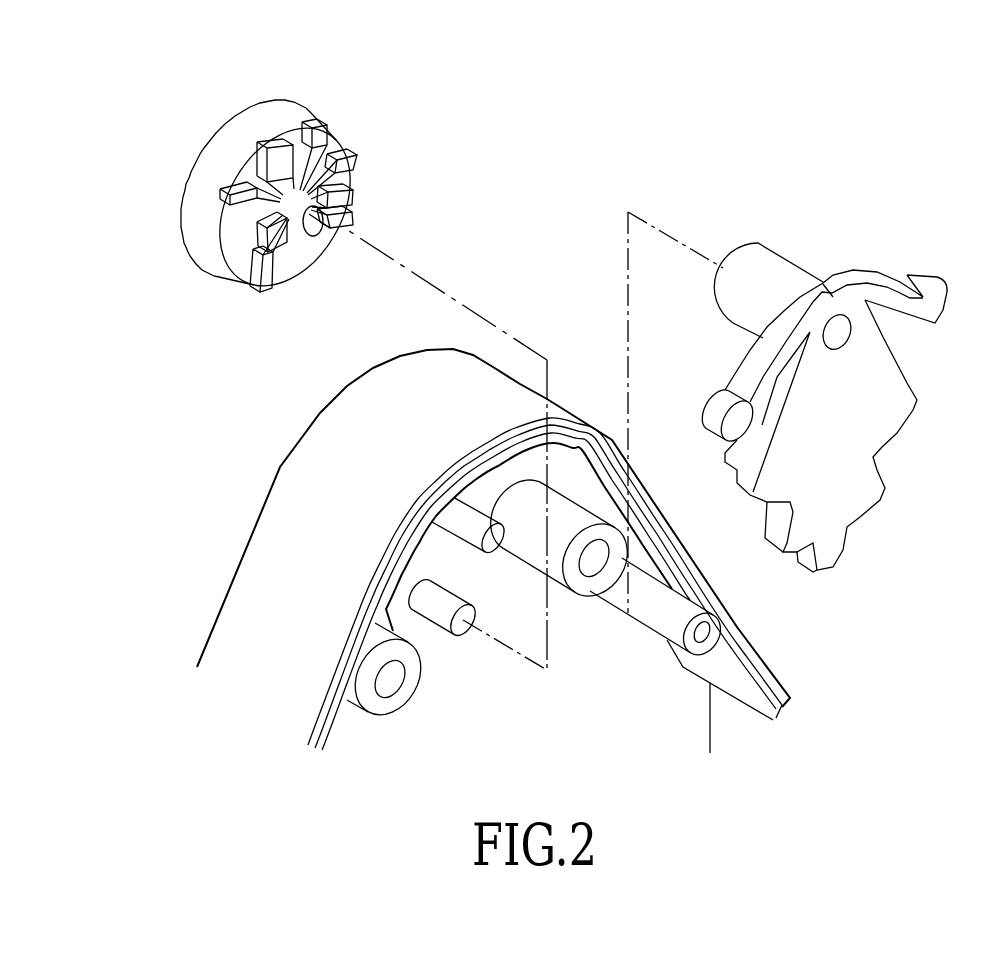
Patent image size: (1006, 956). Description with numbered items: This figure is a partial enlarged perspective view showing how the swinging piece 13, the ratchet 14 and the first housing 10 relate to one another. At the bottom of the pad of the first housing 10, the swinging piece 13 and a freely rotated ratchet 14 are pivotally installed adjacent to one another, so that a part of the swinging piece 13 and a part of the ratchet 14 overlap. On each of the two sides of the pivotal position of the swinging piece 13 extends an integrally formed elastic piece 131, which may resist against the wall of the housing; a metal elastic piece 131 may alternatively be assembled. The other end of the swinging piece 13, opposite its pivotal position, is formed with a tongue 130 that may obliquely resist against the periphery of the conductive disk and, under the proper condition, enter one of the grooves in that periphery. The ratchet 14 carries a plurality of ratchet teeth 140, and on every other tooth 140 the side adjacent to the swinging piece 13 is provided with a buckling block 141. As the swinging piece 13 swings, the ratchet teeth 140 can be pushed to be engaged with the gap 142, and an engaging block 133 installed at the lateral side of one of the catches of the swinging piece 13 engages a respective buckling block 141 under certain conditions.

The first housing 10 is at (270, 522).
The swinging piece 13 is at (806, 395).
The tongue 130 is at (833, 547).
The elastic piece 131 is at (890, 290).
The engaging block 133 is at (735, 452).
The ratchet 14 is at (304, 171).
The ratchet teeth 140 is at (312, 141).
The buckling block 141 is at (318, 186).
The gap 142 is at (297, 143).